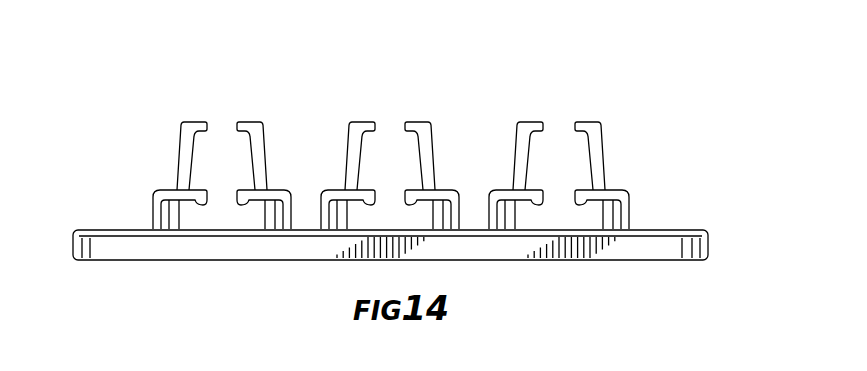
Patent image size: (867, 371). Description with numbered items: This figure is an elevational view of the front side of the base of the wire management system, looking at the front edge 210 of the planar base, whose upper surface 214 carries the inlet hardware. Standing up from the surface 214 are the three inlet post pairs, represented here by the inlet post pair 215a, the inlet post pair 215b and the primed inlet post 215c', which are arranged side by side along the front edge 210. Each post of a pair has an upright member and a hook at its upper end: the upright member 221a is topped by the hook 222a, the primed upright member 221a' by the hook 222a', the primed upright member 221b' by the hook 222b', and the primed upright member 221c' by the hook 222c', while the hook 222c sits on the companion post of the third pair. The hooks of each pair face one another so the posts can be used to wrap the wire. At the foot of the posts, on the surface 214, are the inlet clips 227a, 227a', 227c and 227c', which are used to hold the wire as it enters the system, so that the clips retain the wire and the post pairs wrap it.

The front edge 210 is at (531, 259).
The surface 214 is at (688, 227).
The inlet post pair 215a is at (151, 150).
The inlet post pair 215b is at (359, 117).
The inlet post 215c' is at (652, 152).
The upright member 221a is at (150, 157).
The upright member 221a' is at (289, 147).
The upright member 221b' is at (450, 143).
The upright member 221c' is at (633, 157).
The hook 222a is at (202, 104).
The hook 222a' is at (263, 105).
The hook 222b' is at (404, 98).
The hook 222c is at (518, 98).
The hook 222c' is at (614, 105).
The inlet clip 227a is at (143, 204).
The inlet clip 227a' is at (283, 193).
The inlet clip 227c is at (499, 191).
The inlet clip 227c' is at (652, 202).